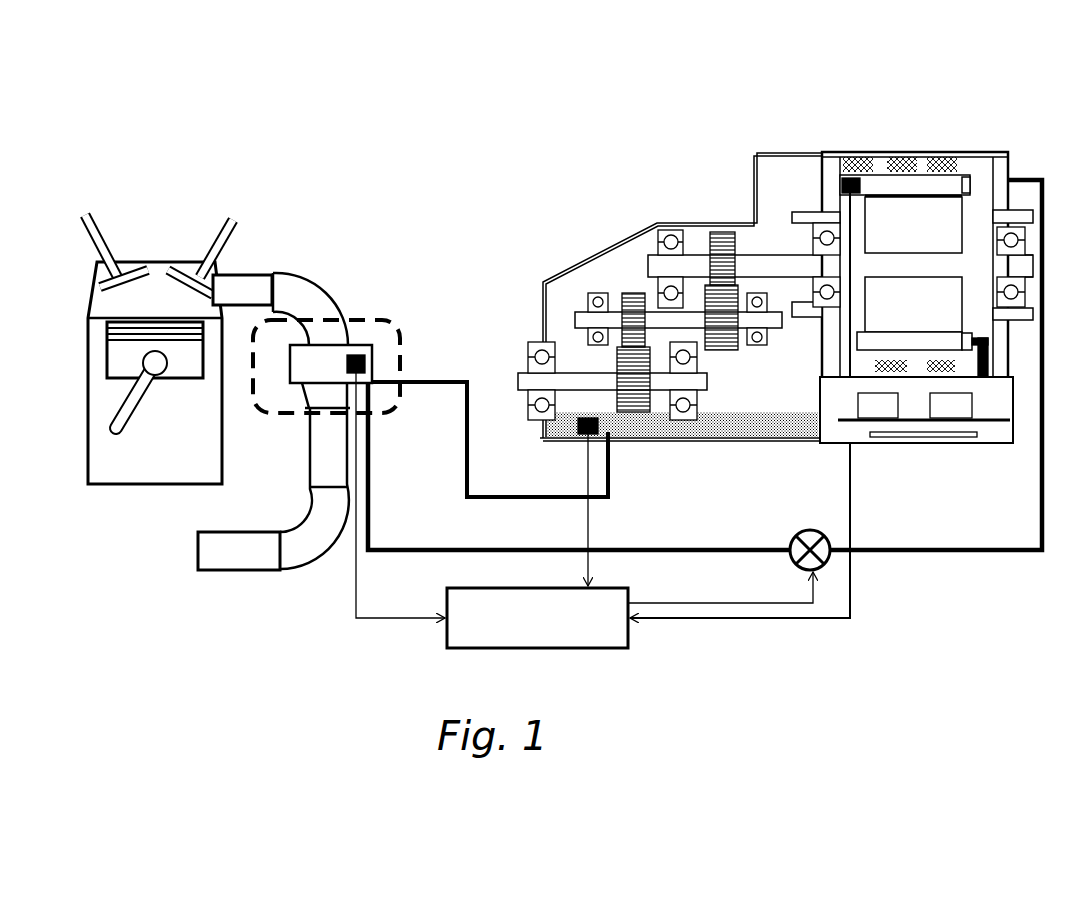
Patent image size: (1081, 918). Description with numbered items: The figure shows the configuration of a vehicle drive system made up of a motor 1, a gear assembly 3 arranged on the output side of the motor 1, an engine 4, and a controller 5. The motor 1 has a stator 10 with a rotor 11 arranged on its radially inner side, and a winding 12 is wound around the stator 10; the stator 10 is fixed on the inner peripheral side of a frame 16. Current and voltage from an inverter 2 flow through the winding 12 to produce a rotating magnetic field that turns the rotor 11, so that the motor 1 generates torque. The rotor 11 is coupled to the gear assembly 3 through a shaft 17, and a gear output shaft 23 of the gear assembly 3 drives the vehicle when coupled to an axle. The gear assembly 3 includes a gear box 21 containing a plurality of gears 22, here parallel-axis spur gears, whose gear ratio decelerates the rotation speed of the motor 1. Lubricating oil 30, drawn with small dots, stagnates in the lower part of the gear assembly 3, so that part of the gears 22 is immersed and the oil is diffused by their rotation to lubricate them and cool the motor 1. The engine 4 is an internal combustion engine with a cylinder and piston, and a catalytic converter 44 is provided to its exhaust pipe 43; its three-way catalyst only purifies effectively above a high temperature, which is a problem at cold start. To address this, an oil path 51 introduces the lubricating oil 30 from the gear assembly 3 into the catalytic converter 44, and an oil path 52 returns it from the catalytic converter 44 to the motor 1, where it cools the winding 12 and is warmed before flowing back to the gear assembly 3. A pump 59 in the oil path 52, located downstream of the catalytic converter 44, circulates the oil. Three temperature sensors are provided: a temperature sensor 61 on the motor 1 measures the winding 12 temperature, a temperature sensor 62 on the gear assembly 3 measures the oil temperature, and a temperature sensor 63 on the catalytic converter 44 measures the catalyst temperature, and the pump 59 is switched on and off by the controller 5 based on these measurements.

The motor 1 is at (923, 220).
The inverter 2 is at (958, 444).
The gear assembly 3 is at (562, 268).
The engine 4 is at (155, 265).
The controller 5 is at (510, 650).
The stator 10 is at (902, 185).
The rotor 11 is at (937, 173).
The winding 12 is at (860, 180).
The frame 16 is at (910, 380).
The shaft 17 is at (1018, 267).
The gear box 21 is at (625, 232).
The gears 22 is at (720, 231).
The gear output shaft 23 is at (520, 375).
The lubricating oil 30 is at (737, 444).
The exhaust pipe 43 is at (290, 285).
The catalytic converter 44 is at (364, 345).
The oil path 51 is at (465, 467).
The oil path 52 is at (437, 548).
The pump 59 is at (808, 530).
The temperature sensor 61 is at (841, 183).
The temperature sensor 62 is at (587, 438).
The temperature sensor 63 is at (367, 363).